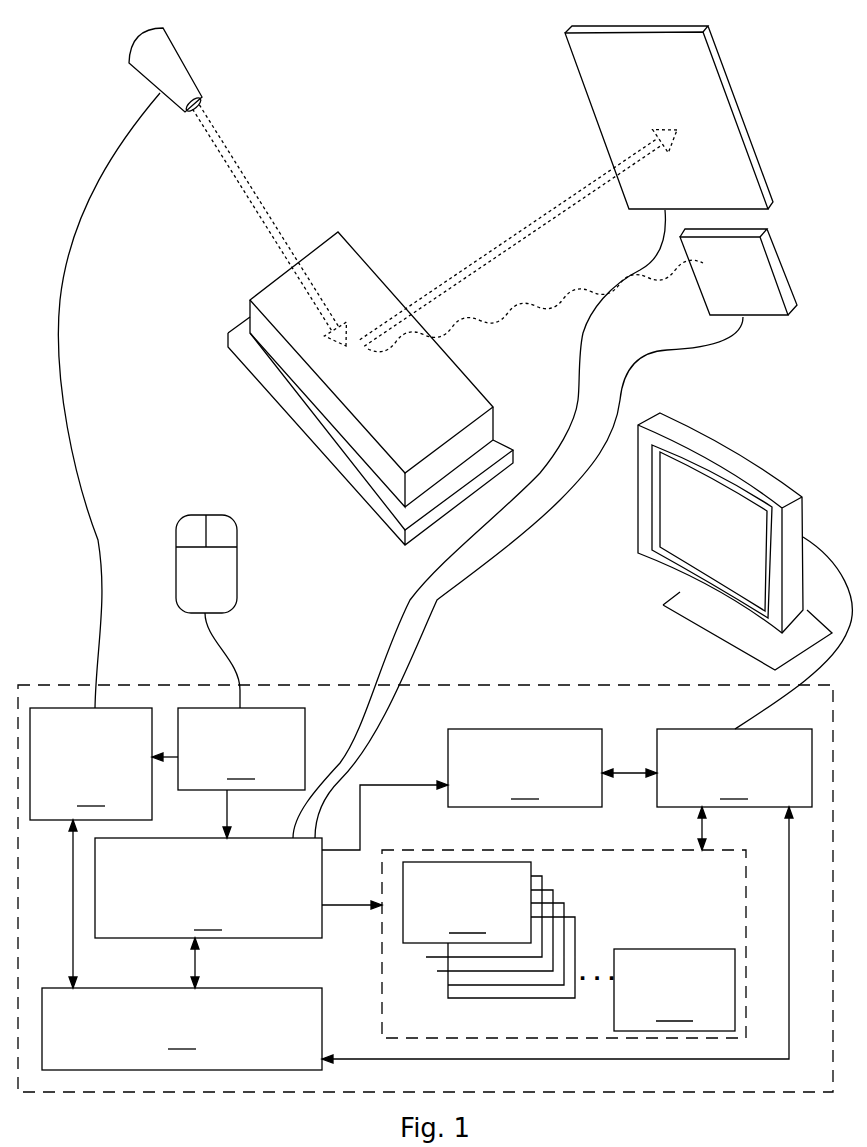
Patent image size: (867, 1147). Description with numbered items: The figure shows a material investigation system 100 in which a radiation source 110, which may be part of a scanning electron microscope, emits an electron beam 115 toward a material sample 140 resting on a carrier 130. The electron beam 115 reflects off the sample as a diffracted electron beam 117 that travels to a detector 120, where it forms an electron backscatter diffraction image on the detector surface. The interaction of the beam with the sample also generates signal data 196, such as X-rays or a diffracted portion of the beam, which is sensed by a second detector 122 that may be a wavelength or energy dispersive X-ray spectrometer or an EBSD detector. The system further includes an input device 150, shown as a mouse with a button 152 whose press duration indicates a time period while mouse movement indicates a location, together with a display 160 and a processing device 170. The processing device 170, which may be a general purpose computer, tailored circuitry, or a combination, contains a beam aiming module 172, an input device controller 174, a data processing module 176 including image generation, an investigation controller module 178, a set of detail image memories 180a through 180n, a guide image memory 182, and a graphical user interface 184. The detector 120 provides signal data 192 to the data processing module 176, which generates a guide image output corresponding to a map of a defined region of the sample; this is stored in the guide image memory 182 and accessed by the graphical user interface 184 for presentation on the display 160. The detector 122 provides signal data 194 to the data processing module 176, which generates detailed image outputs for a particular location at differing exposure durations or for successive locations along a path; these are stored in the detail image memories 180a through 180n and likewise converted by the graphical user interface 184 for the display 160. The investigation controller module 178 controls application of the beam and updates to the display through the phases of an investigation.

The material investigation system 100 is at (457, 86).
The radiation source 110 is at (192, 78).
The electron beam 115 is at (257, 182).
The diffracted electron beam 117 is at (508, 237).
The detector 120 is at (647, 91).
The detector 122 is at (722, 286).
The carrier 130 is at (316, 437).
The material sample 140 is at (407, 407).
The input device 150 is at (229, 582).
The button 152 is at (178, 515).
The display 160 is at (638, 555).
The processing device 170 is at (761, 1086).
The beam aiming module 172 is at (91, 764).
The input device controller 174 is at (241, 749).
The data processing module 176 is at (208, 888).
The investigation controller module 178 is at (182, 1029).
The detail image memory 180a is at (489, 930).
The detail image memory 180n is at (674, 990).
The guide image memory 182 is at (525, 768).
The graphical user interface 184 is at (734, 768).
The signal data 192 is at (405, 603).
The signal data 194 is at (527, 527).
The signal data 196 is at (505, 307).